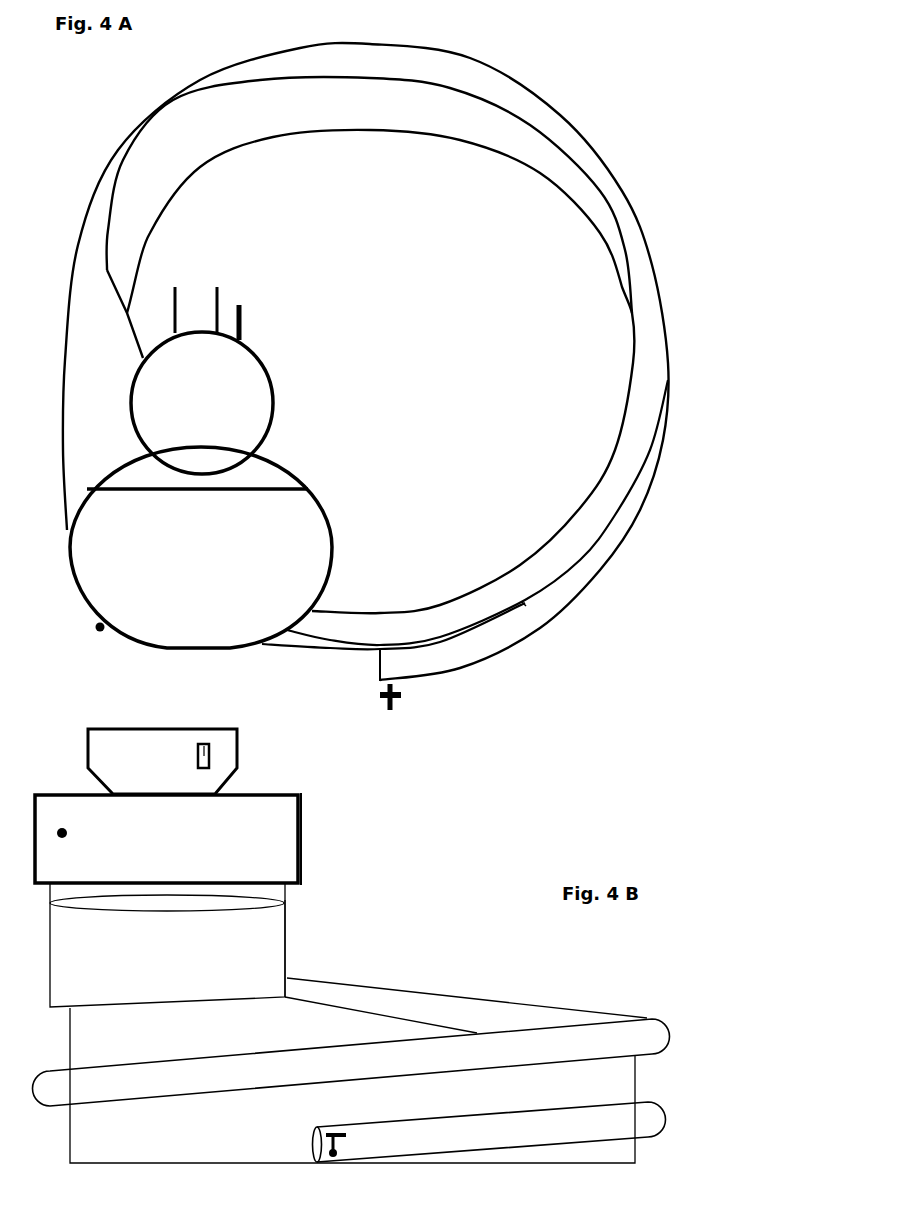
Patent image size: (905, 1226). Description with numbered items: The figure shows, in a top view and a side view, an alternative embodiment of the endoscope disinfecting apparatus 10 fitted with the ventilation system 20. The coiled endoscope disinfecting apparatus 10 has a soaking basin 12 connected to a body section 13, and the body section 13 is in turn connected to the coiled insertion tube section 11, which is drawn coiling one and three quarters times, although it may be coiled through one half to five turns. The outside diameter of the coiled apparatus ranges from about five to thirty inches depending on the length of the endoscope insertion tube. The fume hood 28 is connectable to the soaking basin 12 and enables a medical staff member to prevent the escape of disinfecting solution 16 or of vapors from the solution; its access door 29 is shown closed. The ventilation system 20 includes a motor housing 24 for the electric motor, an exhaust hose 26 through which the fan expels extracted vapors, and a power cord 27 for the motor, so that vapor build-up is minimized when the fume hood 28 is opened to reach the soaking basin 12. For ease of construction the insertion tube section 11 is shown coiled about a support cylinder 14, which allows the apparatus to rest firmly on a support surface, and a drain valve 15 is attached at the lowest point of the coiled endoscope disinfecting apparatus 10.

In FIG. 4A, the endoscope disinfecting apparatus 10 is at (688, 71).
In FIG. 4B, the endoscope disinfecting apparatus 10 is at (463, 855).
In FIG. 4A, the coiled insertion tube section 11 is at (605, 191).
In FIG. 4B, the coiled insertion tube section 11 is at (685, 1026).
In FIG. 4B, the soaking basin 12 is at (287, 935).
In FIG. 4A, the body section 13 is at (88, 370).
In FIG. 4B, the support cylinder 14 is at (358, 1070).
In FIG. 4A, the drain valve 15 is at (400, 698).
In FIG. 4B, the drain valve 15 is at (387, 1039).
In FIG. 4B, the disinfecting solution 16 is at (212, 941).
In FIG. 4A, the ventilation system 20 is at (337, 378).
In FIG. 4A, the motor housing 24 is at (245, 359).
In FIG. 4B, the motor housing 24 is at (162, 761).
In FIG. 4A, the exhaust hose 26 is at (218, 296).
In FIG. 4A, the power cord 27 is at (243, 316).
In FIG. 4A, the fume hood 28 is at (272, 468).
In FIG. 4A, the access door 29 is at (227, 525).
In FIG. 4B, the access door 29 is at (168, 839).